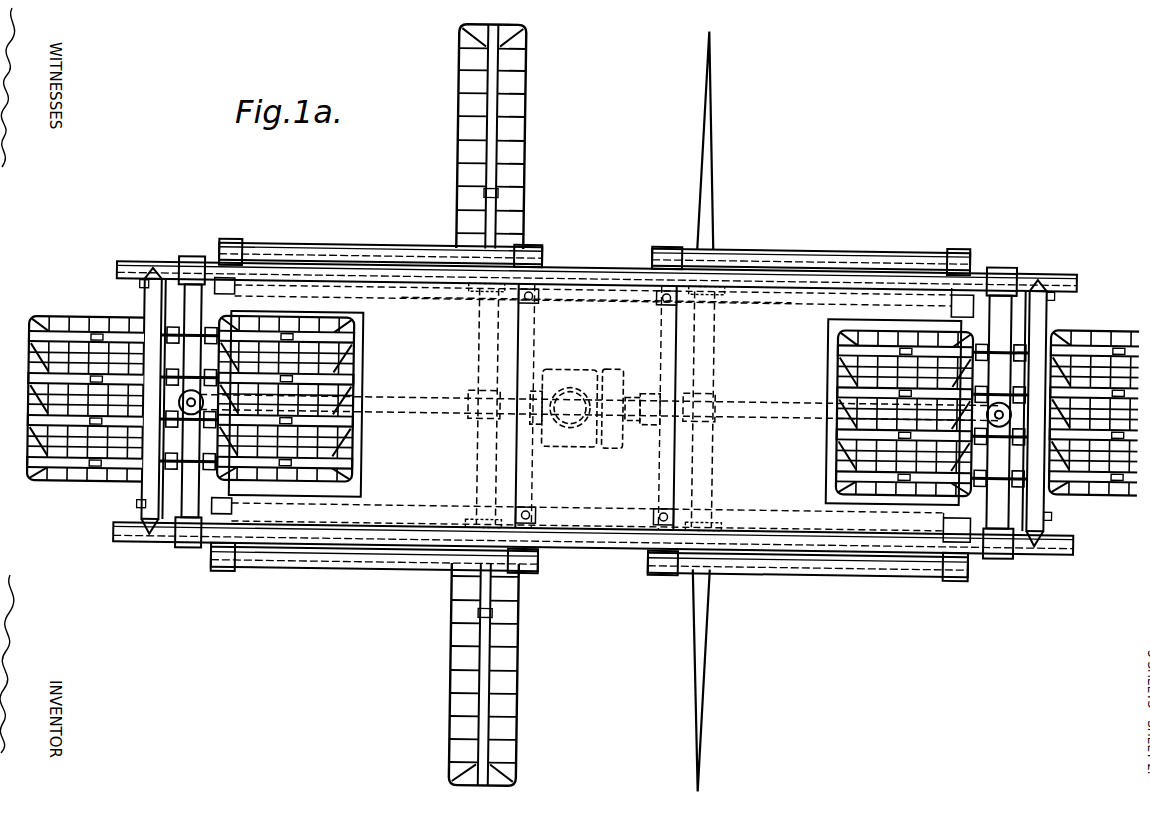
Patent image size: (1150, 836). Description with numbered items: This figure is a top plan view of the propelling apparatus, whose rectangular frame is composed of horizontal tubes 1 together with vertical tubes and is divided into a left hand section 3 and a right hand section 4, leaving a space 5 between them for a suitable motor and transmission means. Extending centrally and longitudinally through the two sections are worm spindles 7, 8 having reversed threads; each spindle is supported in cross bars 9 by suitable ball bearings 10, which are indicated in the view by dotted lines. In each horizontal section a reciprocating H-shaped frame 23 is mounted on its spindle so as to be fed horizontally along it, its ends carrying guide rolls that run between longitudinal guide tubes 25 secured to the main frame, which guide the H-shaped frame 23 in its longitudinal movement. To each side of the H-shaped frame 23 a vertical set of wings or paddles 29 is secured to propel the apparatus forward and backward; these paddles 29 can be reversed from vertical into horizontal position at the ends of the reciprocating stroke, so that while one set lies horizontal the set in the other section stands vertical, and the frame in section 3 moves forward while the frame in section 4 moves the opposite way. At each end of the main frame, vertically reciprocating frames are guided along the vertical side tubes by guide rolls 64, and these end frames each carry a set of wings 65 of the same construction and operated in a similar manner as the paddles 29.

The horizontal tubes 1 is at (578, 273).
The left hand section 3 is at (319, 404).
The right hand section 4 is at (876, 412).
The space 5 is at (597, 322).
The worm spindle 7 is at (403, 416).
The worm spindle 8 is at (794, 417).
The cross bars 9 is at (527, 478).
The ball bearings 10 is at (523, 398).
The H-shaped frame 23 is at (487, 337).
The longitudinal guide tubes 25 is at (282, 248).
The wings or paddles 29 is at (520, 178).
The guide rolls 64 is at (165, 266).
The wings 65 is at (322, 329).